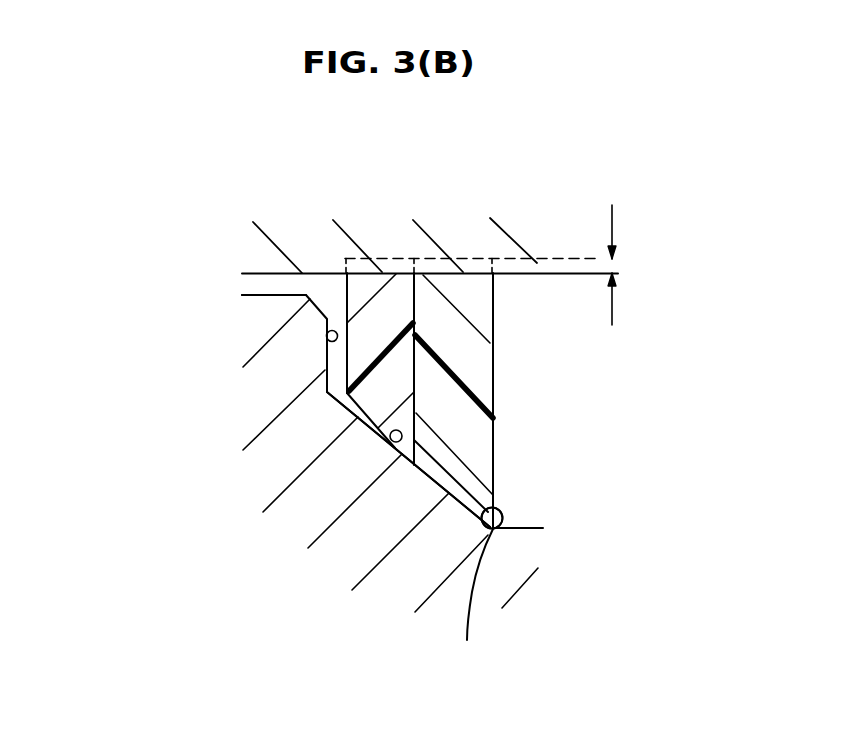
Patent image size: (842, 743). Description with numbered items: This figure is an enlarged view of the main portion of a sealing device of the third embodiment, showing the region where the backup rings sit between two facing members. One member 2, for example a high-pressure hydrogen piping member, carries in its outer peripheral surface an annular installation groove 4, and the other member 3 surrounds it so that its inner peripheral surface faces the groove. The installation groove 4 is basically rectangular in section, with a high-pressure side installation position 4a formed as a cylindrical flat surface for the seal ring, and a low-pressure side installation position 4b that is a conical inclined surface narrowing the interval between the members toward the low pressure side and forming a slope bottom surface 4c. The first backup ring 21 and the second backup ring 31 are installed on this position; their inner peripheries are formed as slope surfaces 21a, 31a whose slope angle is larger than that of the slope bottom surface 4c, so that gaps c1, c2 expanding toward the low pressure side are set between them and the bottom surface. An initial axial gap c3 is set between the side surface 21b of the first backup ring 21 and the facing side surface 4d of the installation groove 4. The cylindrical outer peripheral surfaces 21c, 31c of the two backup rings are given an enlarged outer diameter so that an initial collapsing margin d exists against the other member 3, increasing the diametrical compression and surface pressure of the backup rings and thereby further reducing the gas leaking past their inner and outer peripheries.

The one member 2 is at (502, 570).
The other member 3 is at (503, 250).
The installation groove 4 is at (512, 494).
The high-pressure side installation position 4a is at (528, 528).
The low-pressure side installation position 4b is at (471, 603).
The slope bottom surface 4c is at (400, 452).
The side surface at low pressure side of installation groove 4d is at (327, 327).
The first backup ring 21 is at (367, 288).
The slope surface 21a is at (356, 403).
The side surface at low pressure side of first backup ring 21b is at (346, 373).
The outer peripheral surface of first backup ring 21c is at (386, 258).
The second backup ring 31 is at (453, 288).
The slope surface 31a is at (443, 466).
The outer peripheral surface of second backup ring 31c is at (462, 258).
The gap c1 is at (390, 440).
The gap c2 is at (481, 517).
The initial gap c3 is at (340, 350).
The initial collapsing margin d is at (625, 265).